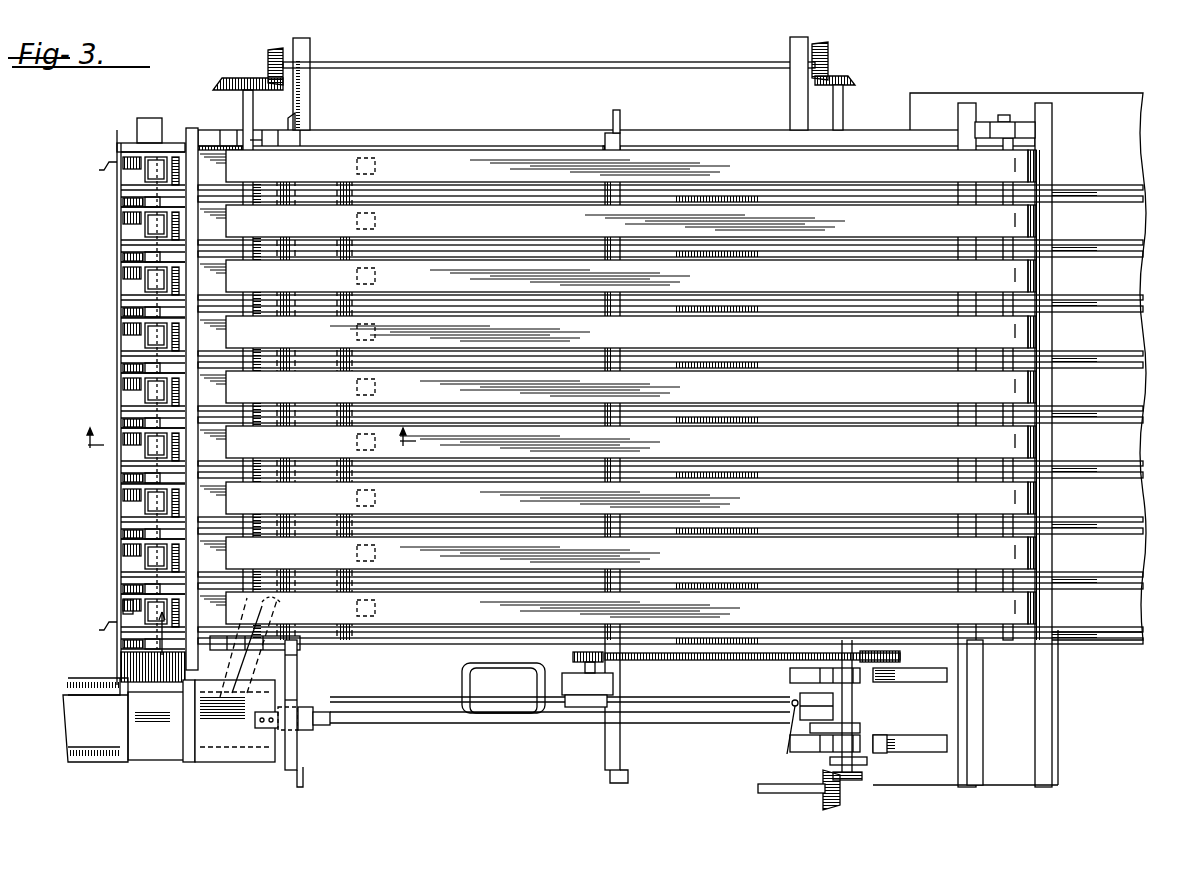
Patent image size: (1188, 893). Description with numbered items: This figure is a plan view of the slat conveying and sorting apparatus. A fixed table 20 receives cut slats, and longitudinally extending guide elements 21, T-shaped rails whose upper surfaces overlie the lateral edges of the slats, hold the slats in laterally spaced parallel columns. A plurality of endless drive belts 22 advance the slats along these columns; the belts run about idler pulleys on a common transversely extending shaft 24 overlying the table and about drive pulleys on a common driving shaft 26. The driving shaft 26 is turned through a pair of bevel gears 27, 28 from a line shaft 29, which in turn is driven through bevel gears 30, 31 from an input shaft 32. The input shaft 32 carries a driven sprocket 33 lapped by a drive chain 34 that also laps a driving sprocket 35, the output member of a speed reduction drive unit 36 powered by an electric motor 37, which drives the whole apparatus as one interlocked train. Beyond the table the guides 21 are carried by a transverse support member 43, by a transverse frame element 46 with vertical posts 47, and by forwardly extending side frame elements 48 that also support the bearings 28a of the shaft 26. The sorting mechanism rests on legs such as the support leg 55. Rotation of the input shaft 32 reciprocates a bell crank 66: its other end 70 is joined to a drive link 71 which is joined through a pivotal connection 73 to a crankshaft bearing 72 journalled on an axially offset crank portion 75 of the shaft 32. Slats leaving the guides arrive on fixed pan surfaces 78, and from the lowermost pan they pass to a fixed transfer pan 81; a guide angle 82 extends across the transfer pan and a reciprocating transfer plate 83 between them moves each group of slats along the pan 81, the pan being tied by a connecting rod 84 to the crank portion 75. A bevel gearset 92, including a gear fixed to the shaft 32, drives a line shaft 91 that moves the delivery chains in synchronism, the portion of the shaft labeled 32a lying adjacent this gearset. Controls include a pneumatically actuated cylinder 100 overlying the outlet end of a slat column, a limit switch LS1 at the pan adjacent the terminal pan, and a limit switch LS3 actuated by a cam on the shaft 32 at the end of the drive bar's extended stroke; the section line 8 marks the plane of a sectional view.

The fixed table 20 is at (1135, 212).
The guide elements 21 is at (826, 194).
The endless drive belts 22 is at (927, 173).
The common transversely extending shaft 24 is at (1003, 115).
The common driving shaft 26 is at (243, 108).
The bevel gear 27 is at (246, 78).
The bevel gear 28 is at (270, 58).
The bearings 28a is at (252, 139).
The line shaft 29 is at (545, 68).
The bevel gear 30 is at (822, 55).
The bevel gear 31 is at (848, 78).
The input shaft 32 is at (843, 108).
The lower shaft portion 32a is at (858, 780).
The driven sprocket 33 is at (900, 657).
The drive chain 34 is at (725, 660).
The driving sprocket 35 is at (573, 658).
The speed reduction drive unit 36 is at (600, 683).
The electric motor 37 is at (470, 679).
The transverse support member 43 is at (612, 520).
The transverse frame element 46 is at (296, 352).
The vertical posts 47 is at (289, 120).
The side frame elements 48 is at (206, 128).
The support leg 55 is at (104, 170).
The bell crank 66 is at (258, 673).
The other end of the bell crank 70 is at (240, 660).
The drive link 71 is at (396, 723).
The crankshaft bearing 72 is at (833, 706).
The pivotal connection 73 is at (789, 742).
The crank portion 75 is at (813, 689).
The pan surfaces 78 is at (128, 343).
The transfer pan 81 is at (153, 745).
The guide angle 82 is at (190, 745).
The reciprocating transfer plate 83 is at (238, 740).
The connecting rod 84 is at (455, 724).
The line shaft 91 is at (758, 789).
The bevel gearset 92 is at (840, 796).
The pneumatically actuated cylinder 100 is at (163, 644).
The limit switch LS1 is at (123, 607).
The limit switch LS3 is at (884, 736).
The section line 8- 8 is at (244, 446).